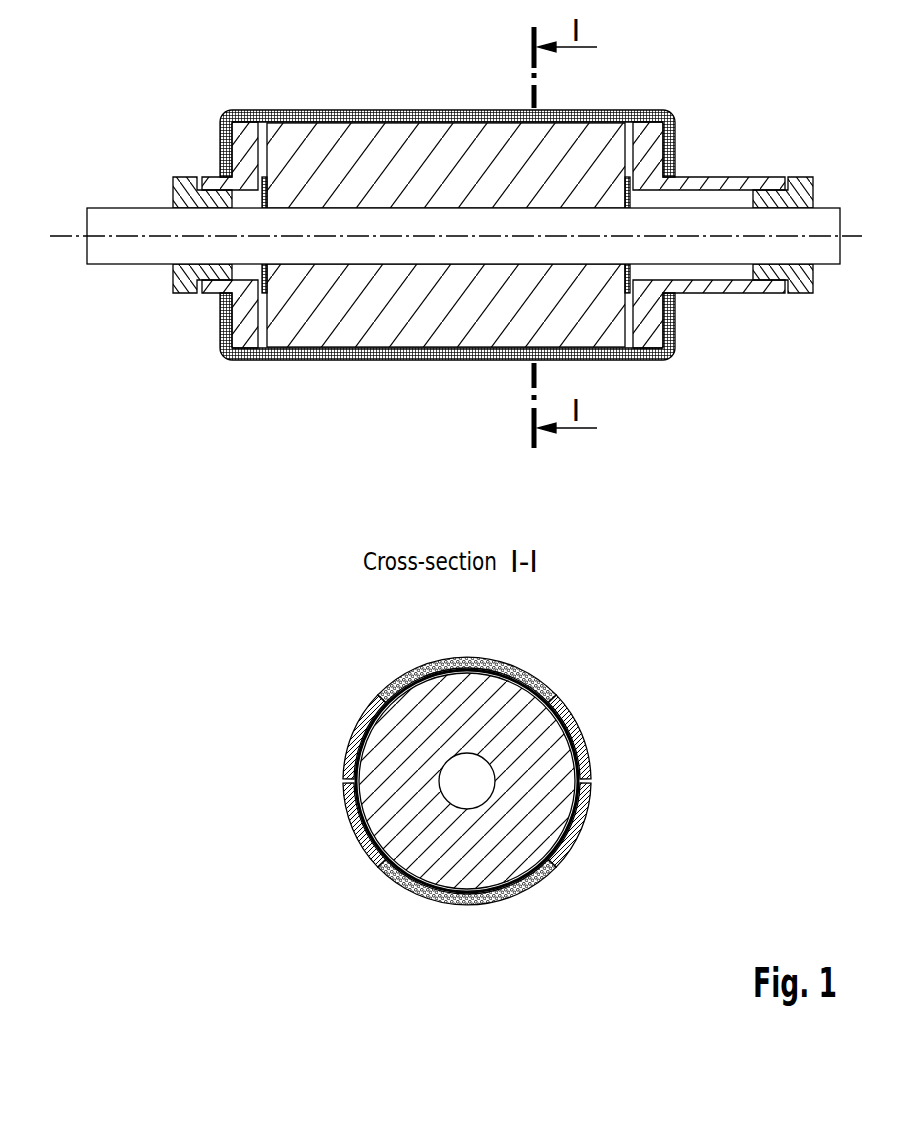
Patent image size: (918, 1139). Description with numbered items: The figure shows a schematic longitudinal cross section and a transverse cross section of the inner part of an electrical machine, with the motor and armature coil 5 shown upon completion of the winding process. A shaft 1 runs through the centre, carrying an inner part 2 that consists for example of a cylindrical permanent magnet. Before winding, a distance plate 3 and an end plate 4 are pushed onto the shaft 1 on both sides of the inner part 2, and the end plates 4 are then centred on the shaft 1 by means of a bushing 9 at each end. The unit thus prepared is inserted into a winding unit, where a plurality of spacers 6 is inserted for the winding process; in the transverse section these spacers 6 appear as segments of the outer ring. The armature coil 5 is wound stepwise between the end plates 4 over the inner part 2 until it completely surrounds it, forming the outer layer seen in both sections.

The shaft 1 is at (107, 262).
The inner part 2 is at (334, 343).
The distance plate 3 is at (265, 291).
The end plate 4 is at (246, 346).
The armature coil 5 is at (405, 358).
The spacer 6 is at (593, 766).
The bushing 9 is at (190, 293).